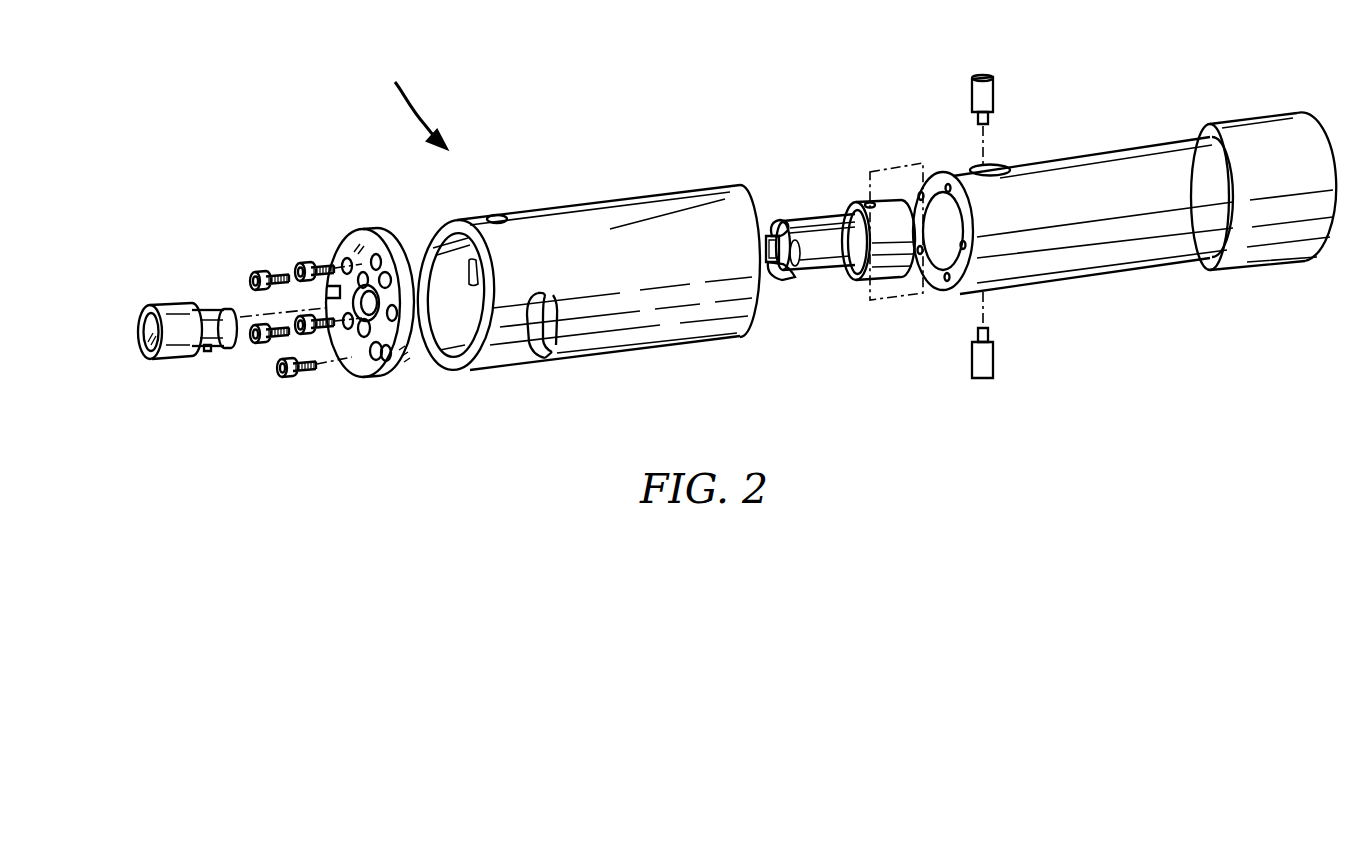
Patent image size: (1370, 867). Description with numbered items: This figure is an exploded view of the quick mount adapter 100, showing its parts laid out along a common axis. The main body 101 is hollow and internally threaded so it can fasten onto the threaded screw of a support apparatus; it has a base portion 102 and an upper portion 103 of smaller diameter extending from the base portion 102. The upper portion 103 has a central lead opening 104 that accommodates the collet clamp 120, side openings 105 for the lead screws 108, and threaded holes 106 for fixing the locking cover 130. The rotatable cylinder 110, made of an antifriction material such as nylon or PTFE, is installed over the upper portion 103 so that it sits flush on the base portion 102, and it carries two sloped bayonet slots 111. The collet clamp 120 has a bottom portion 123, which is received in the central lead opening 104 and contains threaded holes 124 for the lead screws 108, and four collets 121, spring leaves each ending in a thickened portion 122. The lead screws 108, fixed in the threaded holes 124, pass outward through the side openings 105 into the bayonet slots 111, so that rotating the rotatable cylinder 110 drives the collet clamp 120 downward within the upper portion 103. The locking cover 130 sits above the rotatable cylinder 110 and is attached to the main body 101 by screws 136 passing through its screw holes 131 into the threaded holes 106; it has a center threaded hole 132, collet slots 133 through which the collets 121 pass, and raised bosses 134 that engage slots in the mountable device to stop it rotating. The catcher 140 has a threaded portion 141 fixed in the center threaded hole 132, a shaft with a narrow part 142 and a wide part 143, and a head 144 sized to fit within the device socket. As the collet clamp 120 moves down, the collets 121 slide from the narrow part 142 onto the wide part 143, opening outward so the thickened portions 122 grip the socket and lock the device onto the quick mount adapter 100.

The quick mount adapter 100 is at (399, 104).
The main body 101 is at (1173, 152).
The base portion 102 is at (1259, 124).
The upper portion 103 is at (1168, 258).
The central lead opening 104 is at (943, 250).
The side openings 105 is at (1000, 167).
The threaded holes 106 is at (943, 178).
The lead screws 108 is at (996, 90).
The rotatable cylinder 110 is at (566, 207).
The bayonet slots 111 is at (536, 350).
The collet clamp 120 is at (812, 221).
The collets 121 is at (822, 262).
The thickened portion 122 is at (780, 230).
The bottom portion 123 is at (888, 270).
The threaded holes 124 is at (868, 204).
The locking cover 130 is at (360, 240).
The screw holes 131 is at (346, 336).
The center threaded hole 132 is at (354, 288).
The collet slots 133 is at (378, 357).
The bosses 134 is at (403, 372).
The screws 136 is at (283, 378).
The catcher 140 is at (165, 303).
The threaded portion 141 is at (232, 309).
The narrow part 142 is at (200, 310).
The wide part 143 is at (209, 352).
The head 144 is at (143, 324).